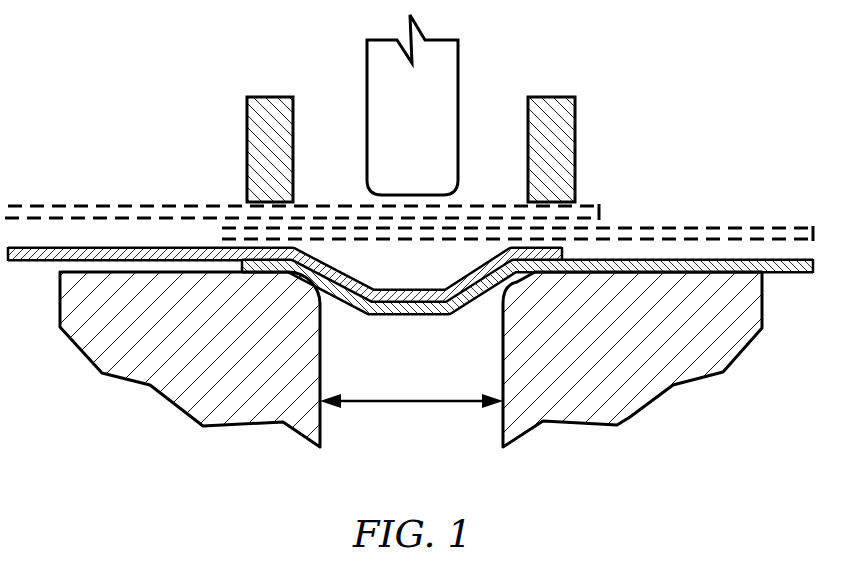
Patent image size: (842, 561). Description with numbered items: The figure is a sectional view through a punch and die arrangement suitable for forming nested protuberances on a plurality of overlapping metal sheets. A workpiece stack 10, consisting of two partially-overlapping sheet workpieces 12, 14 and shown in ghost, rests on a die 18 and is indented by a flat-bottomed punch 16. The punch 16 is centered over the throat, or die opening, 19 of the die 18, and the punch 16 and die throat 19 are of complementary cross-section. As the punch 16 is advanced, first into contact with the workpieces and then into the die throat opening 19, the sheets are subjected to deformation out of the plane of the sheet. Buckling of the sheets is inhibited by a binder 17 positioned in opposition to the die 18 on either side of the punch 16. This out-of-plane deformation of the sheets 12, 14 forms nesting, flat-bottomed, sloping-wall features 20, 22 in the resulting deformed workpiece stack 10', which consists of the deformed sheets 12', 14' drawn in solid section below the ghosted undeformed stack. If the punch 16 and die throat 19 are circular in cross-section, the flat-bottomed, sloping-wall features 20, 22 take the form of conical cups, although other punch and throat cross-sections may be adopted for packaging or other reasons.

The workpiece stack 10 is at (409, 151).
The sheet workpiece 12 is at (320, 158).
The sheet workpiece 14 is at (517, 193).
The flat-bottomed punch 16 is at (458, 72).
The binder 17 is at (528, 112).
The die 18 is at (617, 413).
The die throat opening 19 is at (415, 403).
The flat-bottomed sloping-wall feature 20 is at (405, 316).
The flat-bottomed sloping-wall feature 22 is at (393, 290).
The deformed workpiece stack 10' is at (410, 376).
The deformed sheet 12' is at (285, 333).
The deformed sheet 14' is at (479, 365).